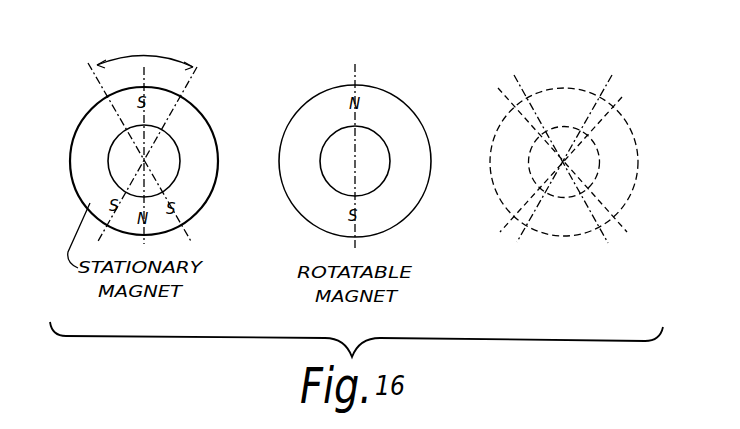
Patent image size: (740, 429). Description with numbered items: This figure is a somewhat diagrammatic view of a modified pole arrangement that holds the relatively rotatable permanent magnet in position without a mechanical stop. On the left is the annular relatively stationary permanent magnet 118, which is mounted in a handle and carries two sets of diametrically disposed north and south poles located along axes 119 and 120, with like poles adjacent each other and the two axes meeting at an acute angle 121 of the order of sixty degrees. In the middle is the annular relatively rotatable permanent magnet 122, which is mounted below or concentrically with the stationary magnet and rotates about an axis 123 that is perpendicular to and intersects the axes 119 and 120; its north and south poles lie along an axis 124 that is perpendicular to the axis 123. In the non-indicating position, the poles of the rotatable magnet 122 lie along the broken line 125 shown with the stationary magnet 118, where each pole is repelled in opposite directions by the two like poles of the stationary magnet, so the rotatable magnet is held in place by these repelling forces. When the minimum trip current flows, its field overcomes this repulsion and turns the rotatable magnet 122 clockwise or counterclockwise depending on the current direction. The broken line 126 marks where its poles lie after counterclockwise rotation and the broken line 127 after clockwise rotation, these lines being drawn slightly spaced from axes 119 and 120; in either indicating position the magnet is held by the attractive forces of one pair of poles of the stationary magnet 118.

The relatively stationary permanent magnet 118 is at (78, 156).
The axis 119 is at (98, 66).
The axis 120 is at (196, 66).
The acute angle 121 is at (177, 60).
The relatively rotatable permanent magnet 122 is at (297, 195).
The axis 123 is at (355, 161).
The axis 124 is at (356, 66).
The broken line 125 is at (147, 68).
The broken line 126 is at (504, 224).
The broken line 127 is at (626, 230).